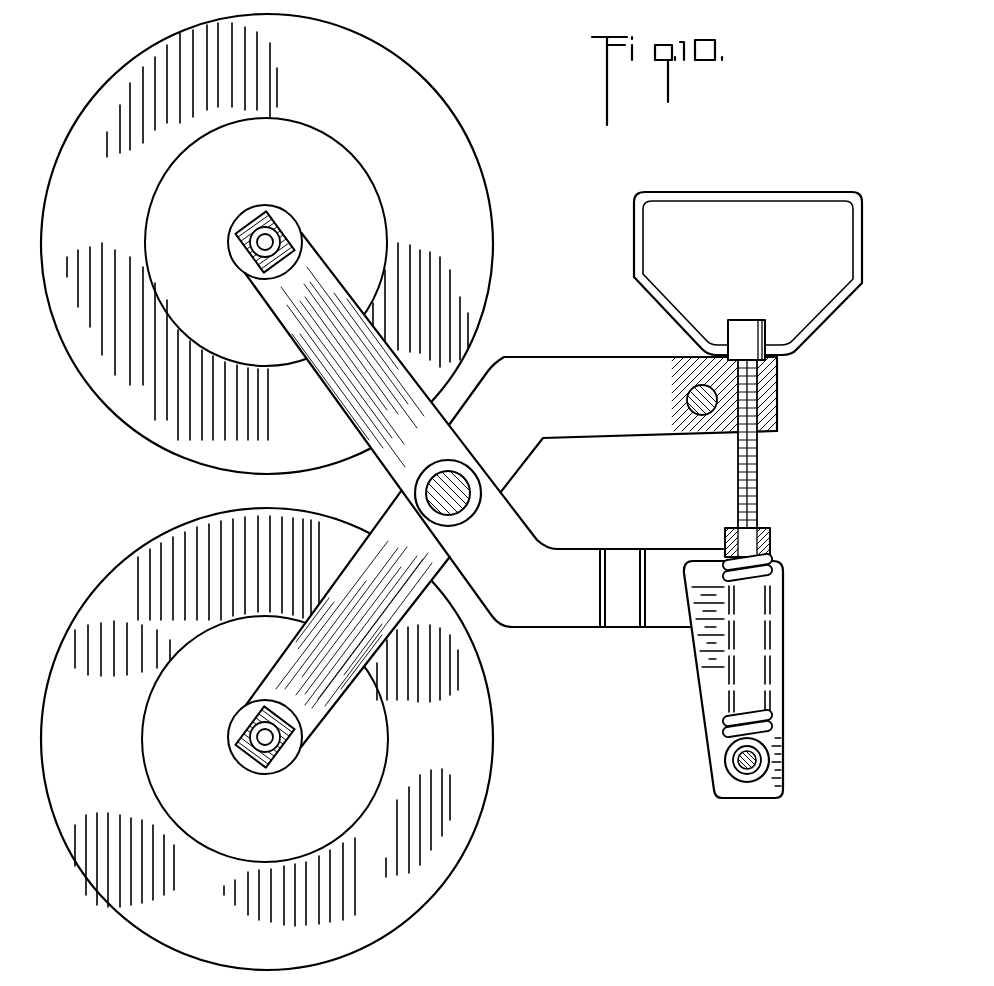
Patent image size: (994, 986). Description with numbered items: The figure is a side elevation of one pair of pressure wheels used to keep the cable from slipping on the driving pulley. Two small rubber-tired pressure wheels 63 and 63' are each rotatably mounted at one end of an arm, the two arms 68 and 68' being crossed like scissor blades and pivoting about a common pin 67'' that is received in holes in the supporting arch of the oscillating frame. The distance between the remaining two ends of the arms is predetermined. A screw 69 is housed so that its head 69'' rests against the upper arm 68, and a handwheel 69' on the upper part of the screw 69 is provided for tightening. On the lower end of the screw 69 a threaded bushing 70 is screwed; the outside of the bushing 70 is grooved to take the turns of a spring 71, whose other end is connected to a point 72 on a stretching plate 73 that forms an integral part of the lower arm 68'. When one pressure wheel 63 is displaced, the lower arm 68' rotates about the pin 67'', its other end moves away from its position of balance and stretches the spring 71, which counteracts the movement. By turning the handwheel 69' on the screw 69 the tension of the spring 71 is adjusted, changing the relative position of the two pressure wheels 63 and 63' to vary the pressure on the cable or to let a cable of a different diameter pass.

The pressure wheel 63 is at (267, 244).
The pressure wheel 63' is at (277, 739).
The pin 67'' is at (471, 476).
The upper arm 68 is at (676, 375).
The lower arm 68' is at (597, 613).
The screw 69 is at (773, 445).
The handwheel 69' is at (748, 242).
The head 69'' is at (791, 347).
The threaded bushing 70 is at (770, 532).
The spring 71 is at (768, 630).
The point 72 is at (740, 768).
The stretching plate 73 is at (700, 710).